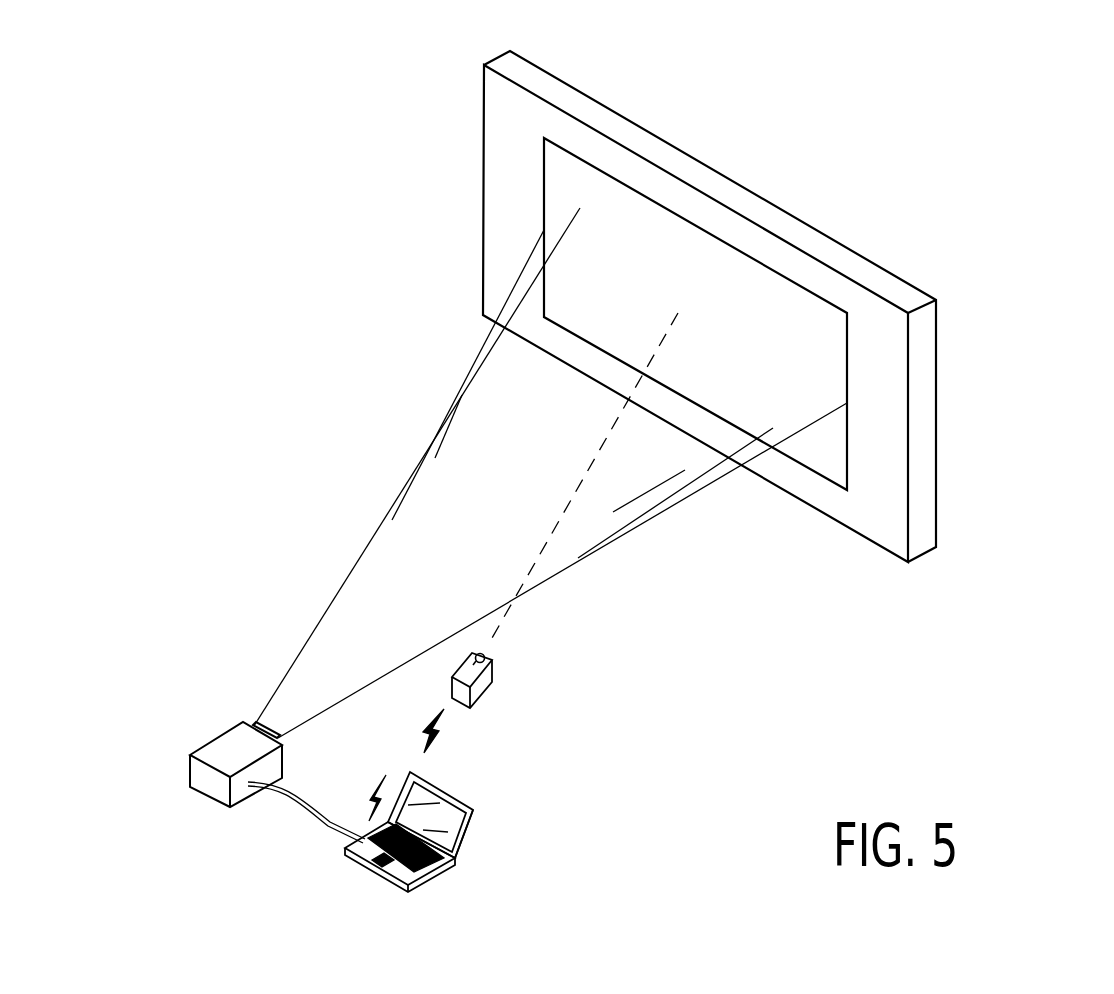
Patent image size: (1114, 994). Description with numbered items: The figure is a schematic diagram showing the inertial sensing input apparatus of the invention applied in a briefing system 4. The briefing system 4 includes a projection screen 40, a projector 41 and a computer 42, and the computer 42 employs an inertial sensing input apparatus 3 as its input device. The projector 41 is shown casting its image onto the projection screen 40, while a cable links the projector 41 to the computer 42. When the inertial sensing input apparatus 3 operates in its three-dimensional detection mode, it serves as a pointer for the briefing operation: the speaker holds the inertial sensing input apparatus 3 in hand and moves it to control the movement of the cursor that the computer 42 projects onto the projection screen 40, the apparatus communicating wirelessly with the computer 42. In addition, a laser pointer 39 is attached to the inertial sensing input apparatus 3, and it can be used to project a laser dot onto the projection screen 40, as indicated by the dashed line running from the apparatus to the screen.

The briefing system 4 is at (338, 145).
The projection screen 40 is at (892, 420).
The projector 41 is at (220, 735).
The computer 42 is at (425, 878).
The inertial sensing input apparatus 3 is at (487, 701).
The laser pointer 39 is at (486, 660).